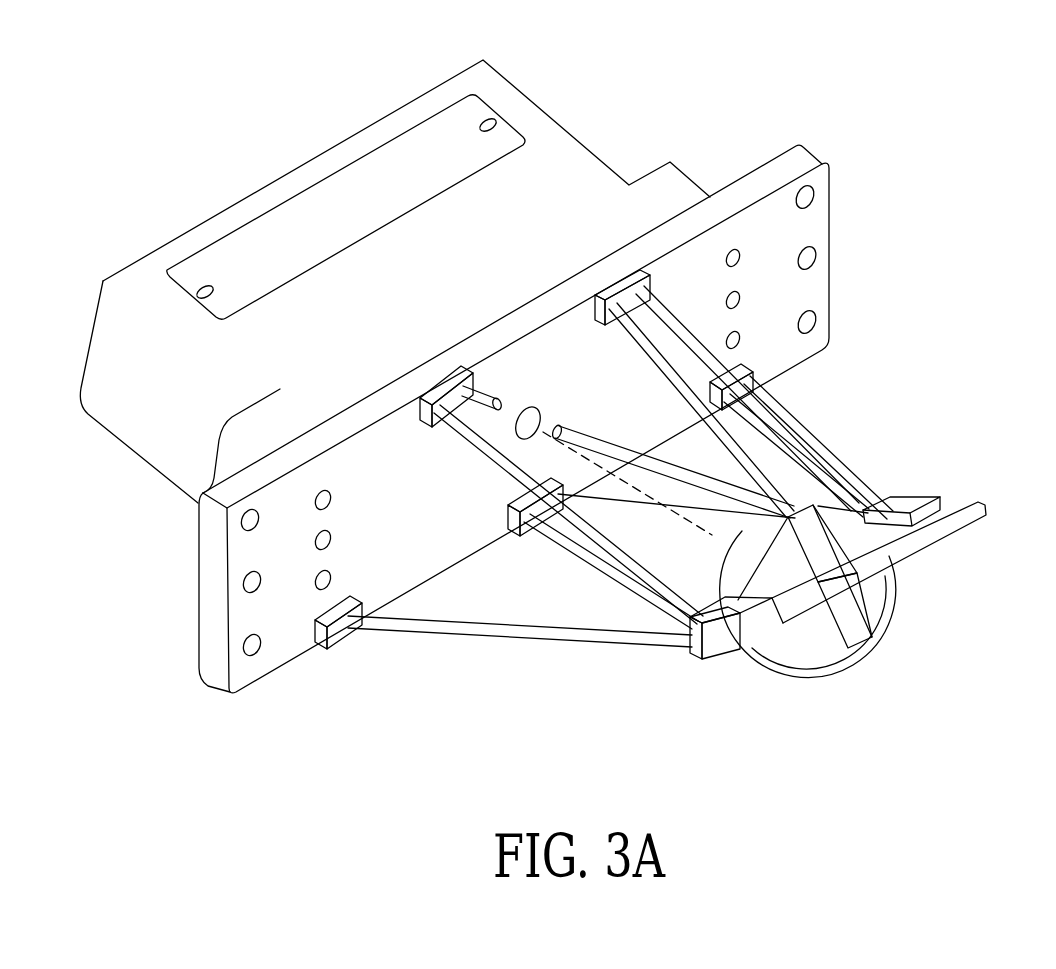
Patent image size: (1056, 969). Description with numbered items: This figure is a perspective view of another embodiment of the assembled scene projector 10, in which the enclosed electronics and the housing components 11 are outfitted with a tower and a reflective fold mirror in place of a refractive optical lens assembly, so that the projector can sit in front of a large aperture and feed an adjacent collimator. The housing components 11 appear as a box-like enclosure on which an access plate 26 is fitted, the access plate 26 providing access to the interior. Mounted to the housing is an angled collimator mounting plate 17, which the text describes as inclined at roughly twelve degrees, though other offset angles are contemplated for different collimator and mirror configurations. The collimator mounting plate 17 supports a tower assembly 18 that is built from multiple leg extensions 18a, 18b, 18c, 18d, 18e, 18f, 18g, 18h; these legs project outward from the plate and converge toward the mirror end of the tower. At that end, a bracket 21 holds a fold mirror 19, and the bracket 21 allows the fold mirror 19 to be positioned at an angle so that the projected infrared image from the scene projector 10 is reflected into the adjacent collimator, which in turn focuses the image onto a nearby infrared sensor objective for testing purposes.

The scene projector 10 is at (940, 79).
The housing components 11 is at (545, 103).
The access plate 26 is at (362, 187).
The collimator mounting plate 17 is at (820, 222).
The tower assembly 18 is at (530, 668).
The leg extension 18a is at (757, 416).
The leg extension 18b is at (800, 443).
The leg extension 18c is at (673, 523).
The leg extension 18d is at (672, 375).
The leg extension 18e is at (493, 393).
The leg extension 18f is at (593, 558).
The leg extension 18g is at (497, 457).
The leg extension 18h is at (450, 627).
The bracket 21 is at (920, 497).
The fold mirror 19 is at (765, 667).